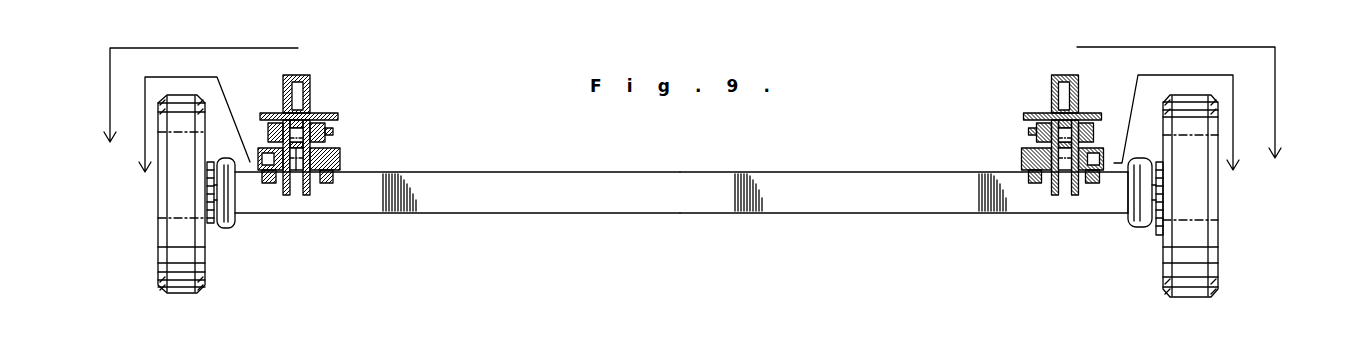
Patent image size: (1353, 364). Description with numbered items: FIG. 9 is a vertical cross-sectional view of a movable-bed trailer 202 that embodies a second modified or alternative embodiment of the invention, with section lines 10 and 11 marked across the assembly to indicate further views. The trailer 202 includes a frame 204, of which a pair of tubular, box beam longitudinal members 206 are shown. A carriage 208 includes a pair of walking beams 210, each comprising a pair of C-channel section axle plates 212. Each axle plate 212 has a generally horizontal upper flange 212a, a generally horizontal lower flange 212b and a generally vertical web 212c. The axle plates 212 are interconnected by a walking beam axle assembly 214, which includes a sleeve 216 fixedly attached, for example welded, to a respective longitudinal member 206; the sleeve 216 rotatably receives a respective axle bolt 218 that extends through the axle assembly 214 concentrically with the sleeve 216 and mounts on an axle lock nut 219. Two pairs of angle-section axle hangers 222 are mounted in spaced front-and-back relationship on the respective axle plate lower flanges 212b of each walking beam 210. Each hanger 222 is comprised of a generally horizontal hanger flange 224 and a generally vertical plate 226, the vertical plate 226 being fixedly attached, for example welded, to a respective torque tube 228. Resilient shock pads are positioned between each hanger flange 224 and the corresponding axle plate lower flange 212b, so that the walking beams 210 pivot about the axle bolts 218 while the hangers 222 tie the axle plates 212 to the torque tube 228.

The section line 10- 10 is at (691, 116).
The section line 11- 11 is at (693, 138).
The movable-bed trailer 202 is at (1293, 62).
The frame 204 is at (1053, 78).
The longitudinal member 206 is at (306, 77).
The carriage 208 is at (250, 217).
The walking beam 210 is at (351, 96).
The axle plate 212 is at (256, 108).
The upper flange 212a is at (334, 113).
The lower flange 212b is at (335, 150).
The web 212c is at (268, 137).
The walking beam axle assembly 214 is at (337, 130).
The sleeve 216 is at (296, 160).
The axle bolt 218 is at (1027, 132).
The axle lock nut 219 is at (1154, 144).
The axle hanger 222 is at (337, 171).
The hanger flange 224 is at (1027, 165).
The vertical plate 226 is at (1052, 196).
The torque tube 228 is at (590, 172).